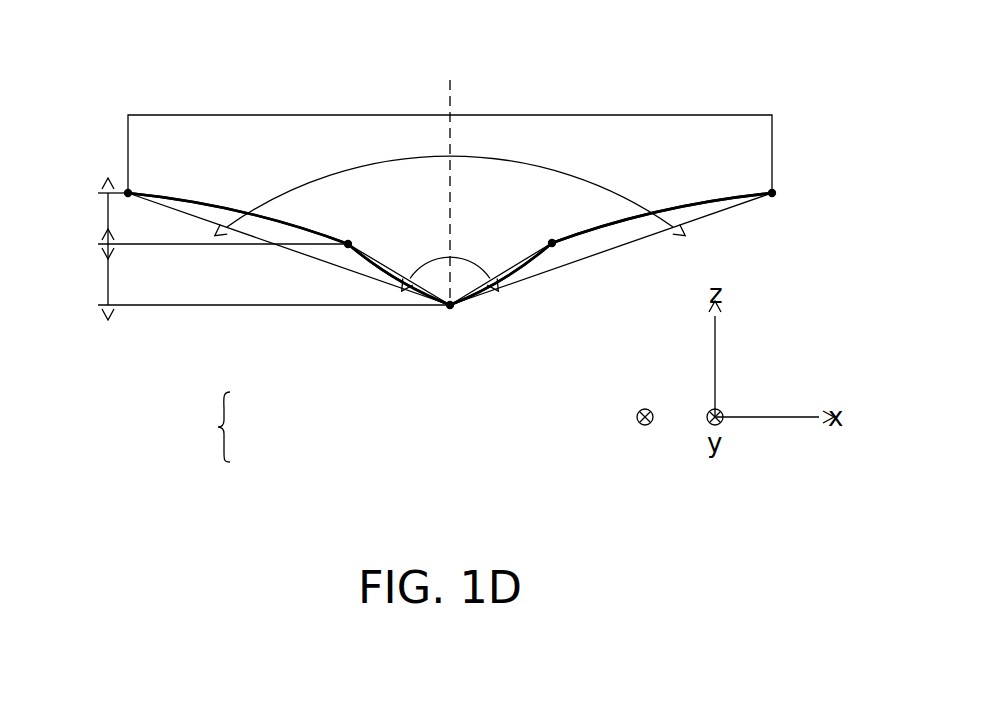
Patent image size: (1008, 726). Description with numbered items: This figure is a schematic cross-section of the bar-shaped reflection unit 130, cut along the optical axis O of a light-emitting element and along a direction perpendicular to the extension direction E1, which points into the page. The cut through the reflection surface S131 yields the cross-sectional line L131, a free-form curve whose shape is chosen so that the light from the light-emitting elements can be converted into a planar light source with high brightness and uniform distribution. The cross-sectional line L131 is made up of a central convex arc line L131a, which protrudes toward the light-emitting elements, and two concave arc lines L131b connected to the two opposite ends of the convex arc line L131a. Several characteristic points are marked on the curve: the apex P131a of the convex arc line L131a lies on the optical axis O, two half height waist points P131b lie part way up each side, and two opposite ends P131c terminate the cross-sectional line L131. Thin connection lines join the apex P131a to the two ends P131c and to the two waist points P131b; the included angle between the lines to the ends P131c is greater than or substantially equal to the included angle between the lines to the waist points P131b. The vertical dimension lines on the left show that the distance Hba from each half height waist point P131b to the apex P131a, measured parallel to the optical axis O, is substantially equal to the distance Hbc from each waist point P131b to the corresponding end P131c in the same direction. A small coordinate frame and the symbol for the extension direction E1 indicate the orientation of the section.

The bar-shaped reflection unit 130 is at (710, 137).
The reflection surface S131 is at (723, 199).
The convex arc line L131a is at (393, 288).
The concave arc lines L131b is at (231, 202).
The cross-sectional line L131 is at (230, 425).
The apex P131a is at (450, 309).
The half height waist points P131b is at (348, 248).
The opposite ends of the cross-sectional line P131c is at (128, 193).
The distance from half height waist points to opposite ends Hbc is at (223, 218).
The distance from half height waist points to apex Hba is at (274, 274).
The optical axis O is at (448, 100).
The extension direction E1 is at (648, 435).